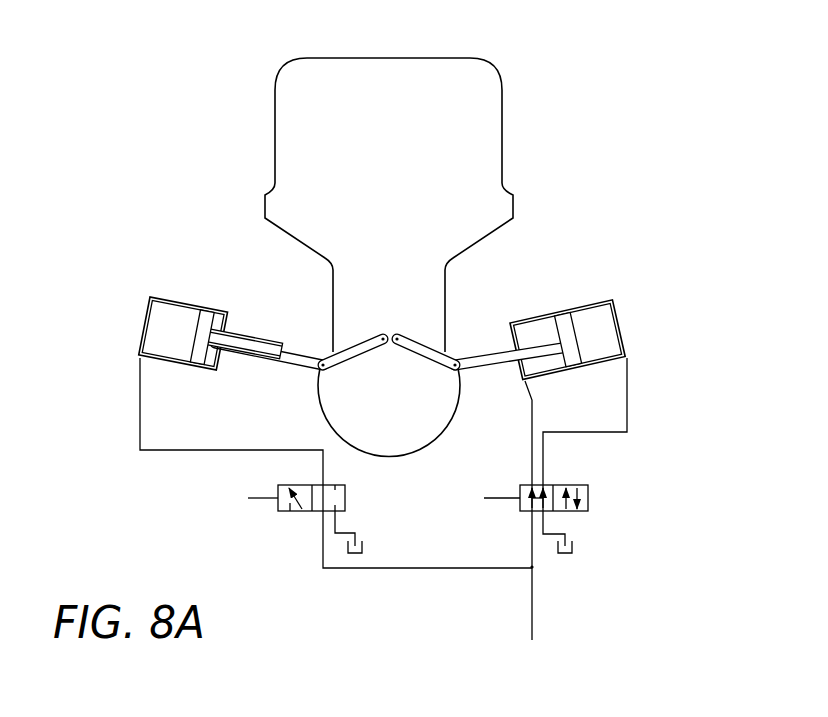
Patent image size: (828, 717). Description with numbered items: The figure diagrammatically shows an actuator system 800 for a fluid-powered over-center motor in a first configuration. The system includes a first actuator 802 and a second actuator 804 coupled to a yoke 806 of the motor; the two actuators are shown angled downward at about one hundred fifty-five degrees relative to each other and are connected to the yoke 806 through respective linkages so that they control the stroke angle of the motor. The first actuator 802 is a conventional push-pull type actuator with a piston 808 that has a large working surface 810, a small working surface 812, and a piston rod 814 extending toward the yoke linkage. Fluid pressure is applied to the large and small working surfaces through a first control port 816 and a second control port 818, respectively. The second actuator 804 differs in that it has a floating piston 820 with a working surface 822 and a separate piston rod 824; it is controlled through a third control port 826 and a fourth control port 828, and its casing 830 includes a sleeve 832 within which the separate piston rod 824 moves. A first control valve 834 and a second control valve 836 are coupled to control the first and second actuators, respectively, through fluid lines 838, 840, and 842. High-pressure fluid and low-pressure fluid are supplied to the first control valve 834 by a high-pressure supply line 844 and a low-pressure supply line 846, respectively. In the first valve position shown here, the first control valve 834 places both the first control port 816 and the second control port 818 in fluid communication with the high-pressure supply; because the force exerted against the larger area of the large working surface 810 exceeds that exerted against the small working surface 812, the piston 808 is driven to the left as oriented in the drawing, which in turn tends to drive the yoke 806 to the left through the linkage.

The actuator system 800 is at (152, 130).
The first actuator 802 is at (640, 326).
The second actuator 804 is at (128, 322).
The yoke 806 is at (493, 155).
The piston 808 is at (567, 330).
The large working surface 810 is at (588, 338).
The small working surface 812 is at (556, 362).
The piston rod 814 is at (497, 350).
The first control port 816 is at (625, 362).
The second control port 818 is at (522, 383).
The floating piston 820 is at (207, 326).
The working surface 822 is at (183, 334).
The separate piston rod 824 is at (263, 365).
The third control port 826 is at (137, 362).
The fourth control port 828 is at (205, 375).
The casing 830 is at (142, 326).
The sleeve 832 is at (245, 332).
The first control valve 834 is at (590, 494).
The second control valve 836 is at (277, 503).
The fluid line 838 is at (628, 408).
The fluid line 840 is at (530, 450).
The fluid line 842 is at (325, 468).
The high-pressure supply line 844 is at (531, 630).
The low-pressure supply line 846 is at (357, 548).